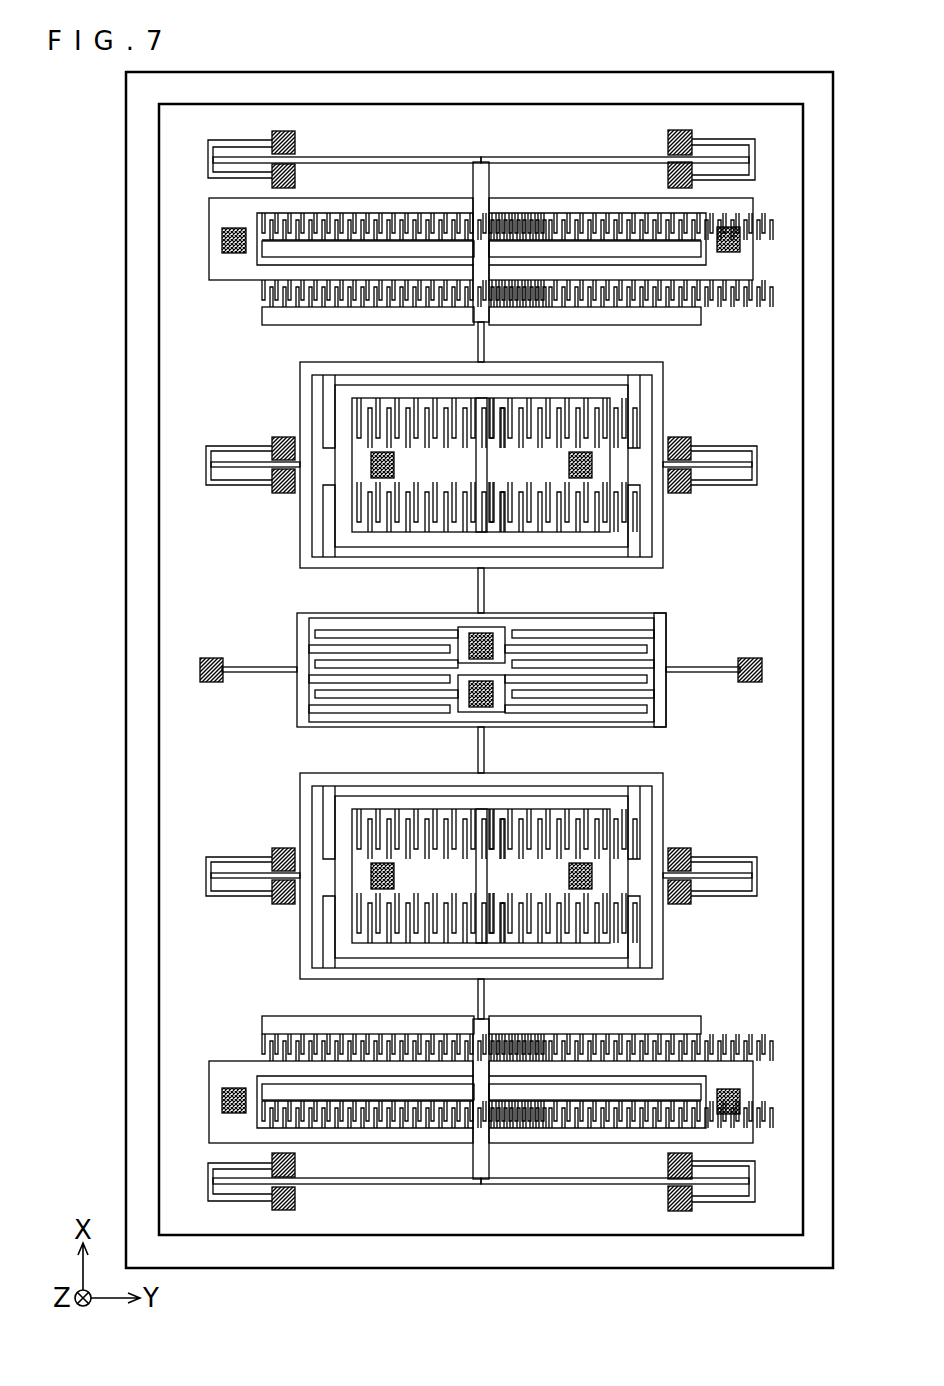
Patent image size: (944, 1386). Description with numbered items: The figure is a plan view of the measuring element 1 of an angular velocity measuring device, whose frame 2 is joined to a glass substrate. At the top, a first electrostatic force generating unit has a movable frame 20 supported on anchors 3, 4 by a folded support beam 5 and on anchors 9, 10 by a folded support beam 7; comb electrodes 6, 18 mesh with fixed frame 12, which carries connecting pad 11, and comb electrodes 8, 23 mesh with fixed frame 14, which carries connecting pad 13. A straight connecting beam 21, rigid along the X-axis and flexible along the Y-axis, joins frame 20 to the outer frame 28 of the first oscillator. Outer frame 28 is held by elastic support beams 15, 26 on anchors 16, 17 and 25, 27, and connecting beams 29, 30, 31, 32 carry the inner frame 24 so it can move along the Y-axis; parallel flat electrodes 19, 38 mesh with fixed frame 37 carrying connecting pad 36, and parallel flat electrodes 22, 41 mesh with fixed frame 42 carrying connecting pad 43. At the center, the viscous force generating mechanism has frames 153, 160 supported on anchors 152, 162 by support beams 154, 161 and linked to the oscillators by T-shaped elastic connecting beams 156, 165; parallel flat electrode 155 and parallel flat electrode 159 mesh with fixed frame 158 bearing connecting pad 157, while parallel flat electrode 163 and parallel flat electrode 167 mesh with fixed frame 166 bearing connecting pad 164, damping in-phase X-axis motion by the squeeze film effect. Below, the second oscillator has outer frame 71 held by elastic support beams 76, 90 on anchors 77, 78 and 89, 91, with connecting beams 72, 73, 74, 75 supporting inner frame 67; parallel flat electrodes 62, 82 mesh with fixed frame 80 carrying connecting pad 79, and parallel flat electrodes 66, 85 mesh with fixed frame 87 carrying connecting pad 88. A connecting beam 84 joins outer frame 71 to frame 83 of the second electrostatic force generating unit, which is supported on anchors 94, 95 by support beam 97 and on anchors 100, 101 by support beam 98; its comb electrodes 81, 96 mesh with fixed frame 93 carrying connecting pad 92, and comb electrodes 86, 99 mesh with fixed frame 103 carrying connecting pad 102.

The measuring element 1 is at (637, 72).
The frame 2 is at (731, 104).
The anchor 3 is at (296, 143).
The anchor 4 is at (296, 177).
The support beam 5 is at (407, 157).
The comb electrode 6 is at (403, 215).
The support beam 7 is at (551, 157).
The comb electrode 8 is at (561, 215).
The anchor 9 is at (667, 143).
The anchor 10 is at (667, 177).
The connecting pad 11 is at (223, 232).
The frame 12 is at (217, 262).
The connecting pad 13 is at (740, 232).
The frame 14 is at (745, 262).
The elastic support beam 15 is at (207, 462).
The anchor 16 is at (273, 445).
The anchor 17 is at (272, 485).
The comb electrode 18 is at (380, 300).
The parallel flat electrode 19 is at (430, 400).
The frame 20 is at (473, 325).
The connecting beam 21 is at (485, 340).
The parallel flat electrode 22 is at (525, 400).
The comb electrode 23 is at (585, 305).
The inner frame 24 is at (622, 392).
The anchor 25 is at (691, 445).
The elastic support beam 26 is at (757, 462).
The anchor 27 is at (691, 485).
The outer frame 28 is at (300, 365).
The connecting beam 29 is at (323, 392).
The connecting beam 30 is at (323, 545).
The connecting beam 31 is at (640, 392).
The connecting beam 32 is at (640, 545).
The connecting pad 36 is at (371, 465).
The frame 37 is at (405, 472).
The parallel flat electrode 38 is at (425, 520).
The parallel flat electrode 41 is at (535, 520).
The frame 42 is at (560, 472).
The connecting pad 43 is at (592, 465).
The parallel flat electrode 62 is at (380, 810).
The parallel flat electrode 66 is at (545, 815).
The inner frame 67 is at (612, 820).
The outer frame 71 is at (300, 775).
The connecting beam 72 is at (323, 802).
The connecting beam 73 is at (323, 955).
The connecting beam 74 is at (640, 802).
The connecting beam 75 is at (640, 955).
The elastic support beam 76 is at (207, 868).
The anchor 77 is at (273, 856).
The anchor 78 is at (272, 896).
The connecting pad 79 is at (371, 876).
The frame 80 is at (385, 935).
The comb electrode 81 is at (352, 1036).
The parallel flat electrode 82 is at (425, 932).
The frame 83 is at (437, 1019).
The connecting beam 84 is at (485, 1000).
The parallel flat electrode 85 is at (535, 932).
The comb electrode 86 is at (588, 1036).
The frame 87 is at (605, 935).
The connecting pad 88 is at (592, 876).
The anchor 89 is at (691, 856).
The elastic support beam 90 is at (757, 868).
The anchor 91 is at (691, 896).
The connecting pad 92 is at (220, 1117).
The frame 93 is at (218, 1082).
The anchor 94 is at (296, 1163).
The anchor 95 is at (296, 1197).
The comb electrode 96 is at (398, 1128).
The support beam 97 is at (410, 1185).
The support beam 98 is at (550, 1185).
The comb electrode 99 is at (553, 1128).
The anchor 100 is at (667, 1163).
The anchor 101 is at (667, 1197).
The connecting pad 102 is at (740, 1090).
The frame 103 is at (745, 1120).
The anchor 152 is at (212, 657).
The frame 153 is at (297, 640).
The support beam 154 is at (252, 672).
The parallel flat electrode 155 is at (320, 632).
The elastic connecting beam 156 is at (478, 590).
The connecting pad 157 is at (470, 636).
The frame 158 is at (488, 615).
The parallel flat electrode 159 is at (645, 632).
The frame 160 is at (666, 640).
The support beam 161 is at (708, 672).
The anchor 162 is at (752, 657).
The parallel flat electrode 163 is at (340, 715).
The connecting pad 164 is at (442, 702).
The elastic connecting beam 165 is at (472, 695).
The frame 166 is at (487, 722).
The parallel flat electrode 167 is at (612, 712).